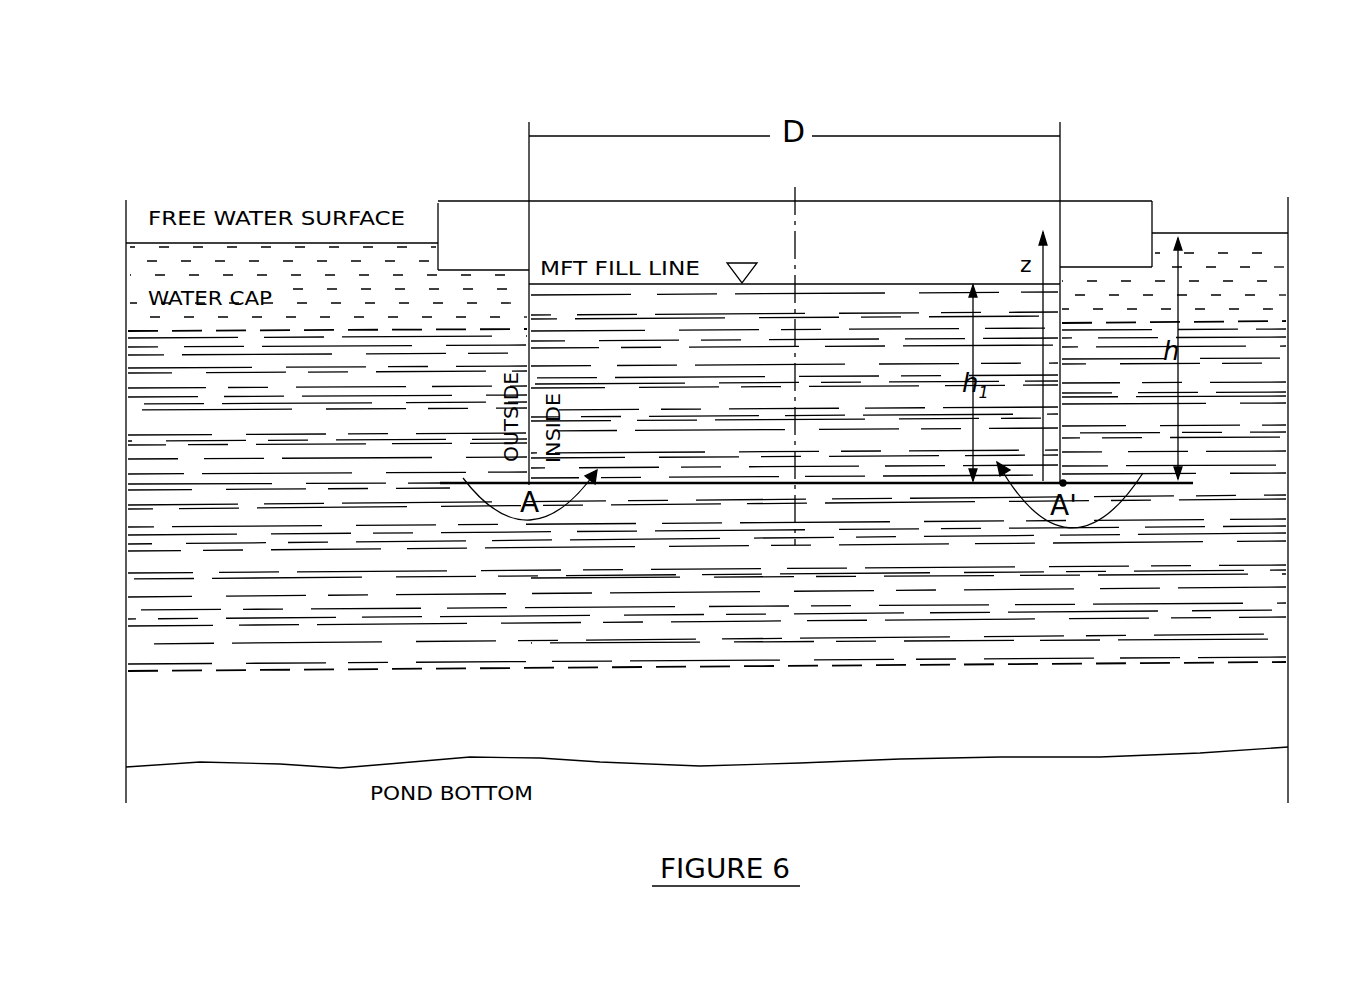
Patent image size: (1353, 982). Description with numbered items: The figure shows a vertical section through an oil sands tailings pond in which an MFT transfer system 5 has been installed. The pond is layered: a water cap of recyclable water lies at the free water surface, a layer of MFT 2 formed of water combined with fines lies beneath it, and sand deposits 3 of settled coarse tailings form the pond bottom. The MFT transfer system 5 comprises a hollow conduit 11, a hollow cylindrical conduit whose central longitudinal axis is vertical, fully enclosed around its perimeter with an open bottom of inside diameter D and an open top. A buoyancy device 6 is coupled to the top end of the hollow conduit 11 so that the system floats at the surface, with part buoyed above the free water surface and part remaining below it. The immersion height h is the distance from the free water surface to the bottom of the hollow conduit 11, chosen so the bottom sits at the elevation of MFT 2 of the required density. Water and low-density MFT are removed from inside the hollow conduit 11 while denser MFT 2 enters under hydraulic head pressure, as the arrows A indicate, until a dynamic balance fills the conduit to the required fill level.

The MFT transfer system 5 is at (470, 143).
The buoyancy device 6 is at (1083, 201).
The hollow conduit 11 is at (1062, 307).
The MFT 2 is at (707, 459).
The sand deposits 3 is at (707, 743).